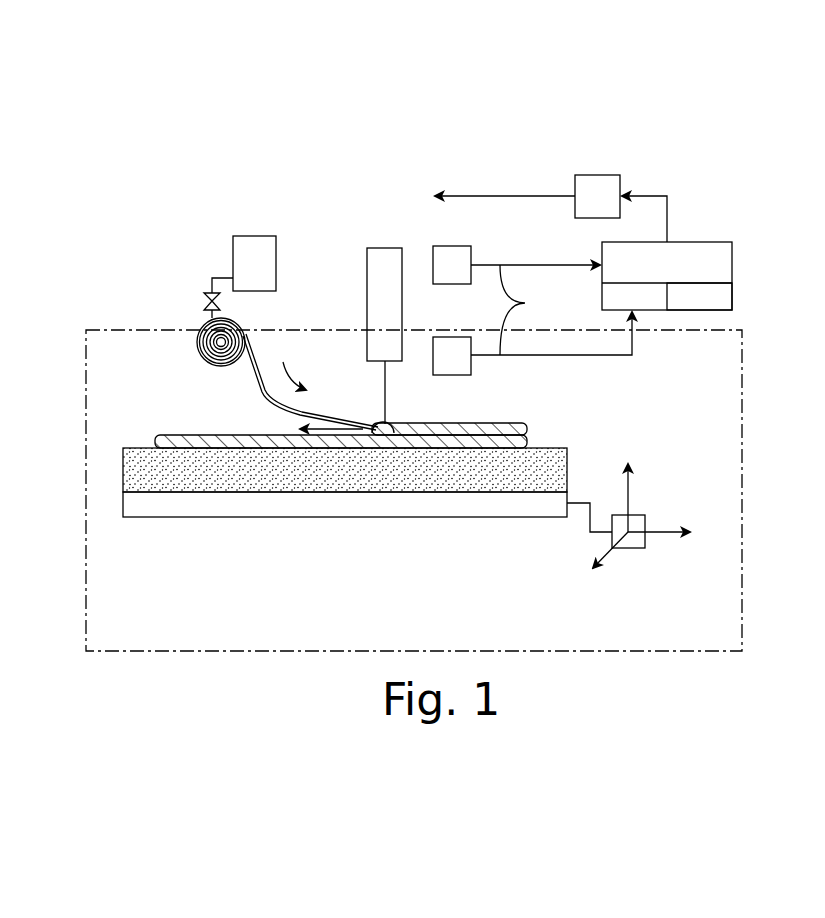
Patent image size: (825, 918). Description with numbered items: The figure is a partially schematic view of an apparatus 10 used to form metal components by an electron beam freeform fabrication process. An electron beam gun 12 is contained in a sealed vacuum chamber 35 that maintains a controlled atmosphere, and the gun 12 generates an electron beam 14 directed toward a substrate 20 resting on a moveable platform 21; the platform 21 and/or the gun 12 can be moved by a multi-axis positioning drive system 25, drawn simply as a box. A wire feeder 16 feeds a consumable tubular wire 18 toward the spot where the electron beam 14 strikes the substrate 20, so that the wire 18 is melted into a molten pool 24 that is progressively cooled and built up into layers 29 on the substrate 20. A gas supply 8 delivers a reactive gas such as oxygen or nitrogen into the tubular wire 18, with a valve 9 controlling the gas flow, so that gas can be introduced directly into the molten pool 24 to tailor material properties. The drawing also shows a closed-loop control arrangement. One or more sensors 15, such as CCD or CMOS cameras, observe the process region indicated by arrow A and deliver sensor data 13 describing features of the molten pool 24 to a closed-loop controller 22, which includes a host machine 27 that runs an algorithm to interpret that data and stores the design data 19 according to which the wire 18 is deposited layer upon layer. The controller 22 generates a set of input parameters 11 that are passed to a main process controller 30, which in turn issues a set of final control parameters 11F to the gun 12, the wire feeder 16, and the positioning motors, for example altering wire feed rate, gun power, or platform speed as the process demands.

The gas supply 8 is at (252, 236).
The valve 9 is at (222, 302).
The apparatus 10 is at (696, 158).
The input parameters 11 is at (663, 194).
The final control parameters 11F is at (548, 196).
The electron beam gun 12 is at (367, 266).
The sensor data 13 is at (532, 310).
The electron beam 14 is at (382, 378).
The sensors 15 is at (433, 260).
The wire feeder 16 is at (197, 342).
The tubular wire 18 is at (262, 394).
The design data 19 is at (699, 297).
The substrate 20 is at (118, 486).
The moveable platform 21 is at (262, 518).
The closed-loop controller 22 is at (681, 246).
The molten pool 24 is at (388, 420).
The multi-axis positioning drive system 25 is at (632, 515).
The host machine 27 is at (732, 265).
The layers 29 is at (536, 442).
The main process controller 30 is at (600, 175).
The vacuum chamber 35 is at (86, 367).
The process region A is at (287, 359).